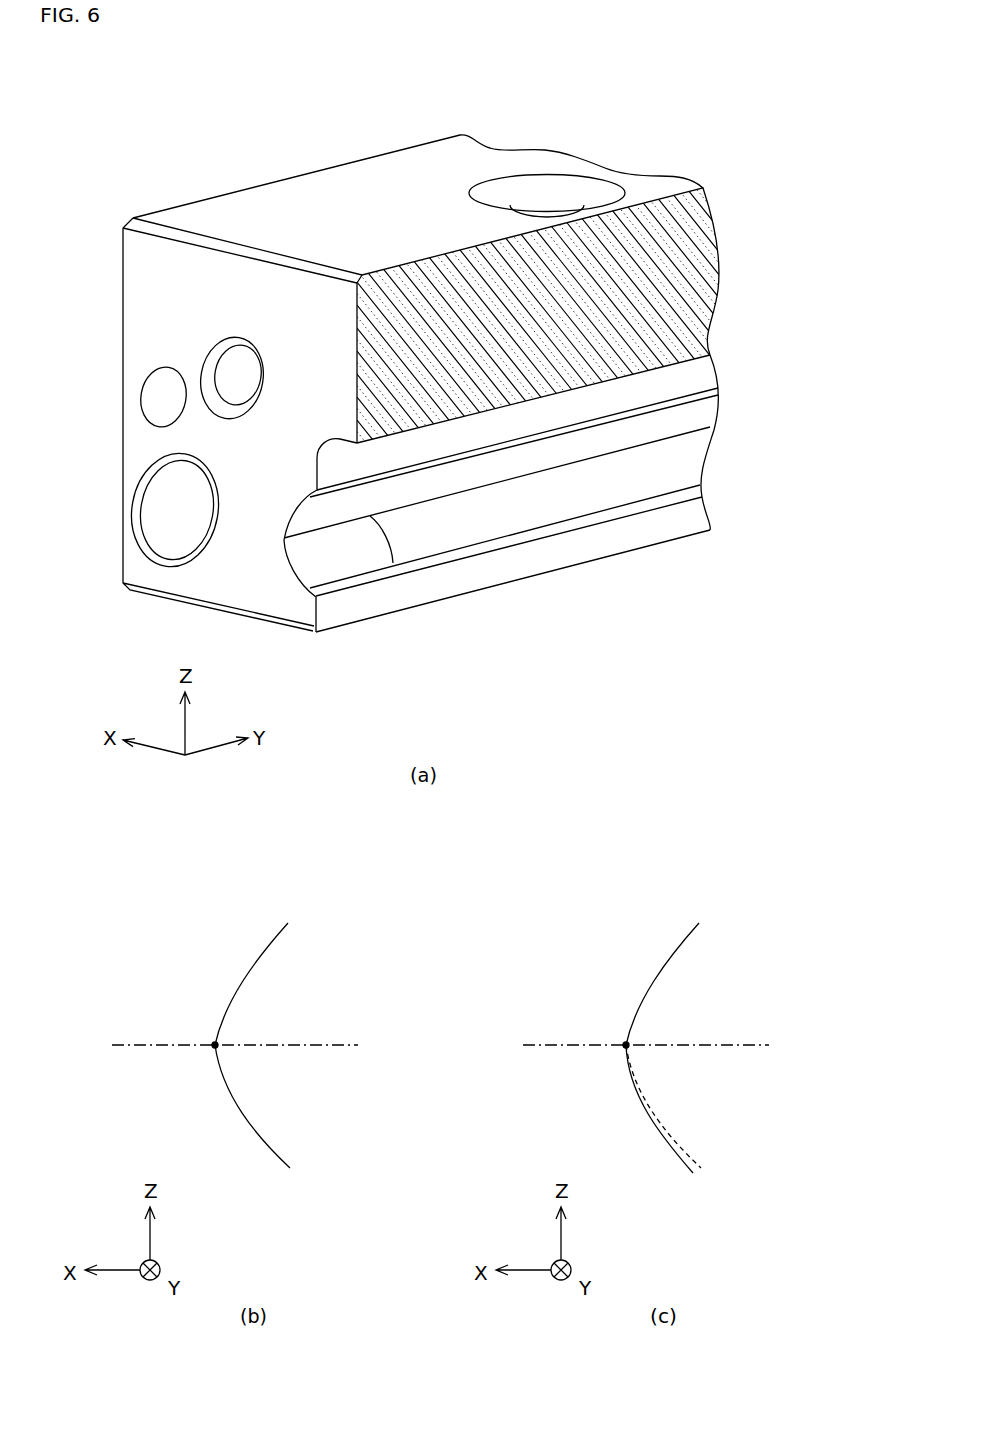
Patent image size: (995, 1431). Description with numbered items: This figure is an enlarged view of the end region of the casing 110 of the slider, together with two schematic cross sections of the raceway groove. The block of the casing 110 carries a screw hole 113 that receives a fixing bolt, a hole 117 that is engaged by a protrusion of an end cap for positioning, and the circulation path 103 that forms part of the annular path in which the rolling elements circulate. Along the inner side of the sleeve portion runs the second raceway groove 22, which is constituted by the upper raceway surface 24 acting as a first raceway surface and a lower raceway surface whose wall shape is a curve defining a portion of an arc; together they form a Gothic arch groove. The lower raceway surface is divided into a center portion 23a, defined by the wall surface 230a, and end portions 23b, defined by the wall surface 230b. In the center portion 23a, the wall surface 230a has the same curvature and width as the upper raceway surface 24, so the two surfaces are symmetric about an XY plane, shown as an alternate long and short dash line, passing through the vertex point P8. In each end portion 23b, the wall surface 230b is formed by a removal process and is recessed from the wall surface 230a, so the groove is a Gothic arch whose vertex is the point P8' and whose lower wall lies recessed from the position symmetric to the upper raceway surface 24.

The casing 110 is at (419, 614).
The screw hole 113 is at (233, 356).
The hole 117 is at (158, 389).
The circulation path 103 is at (172, 488).
The second raceway groove 22 is at (303, 540).
The upper raceway surface 24 is at (547, 453).
The wall surface 230a is at (496, 827).
The center portion 23a is at (482, 518).
The wall surface 230b is at (527, 862).
The end portion 23b is at (345, 558).
The point P8 is at (187, 1060).
The point P8' is at (596, 1060).